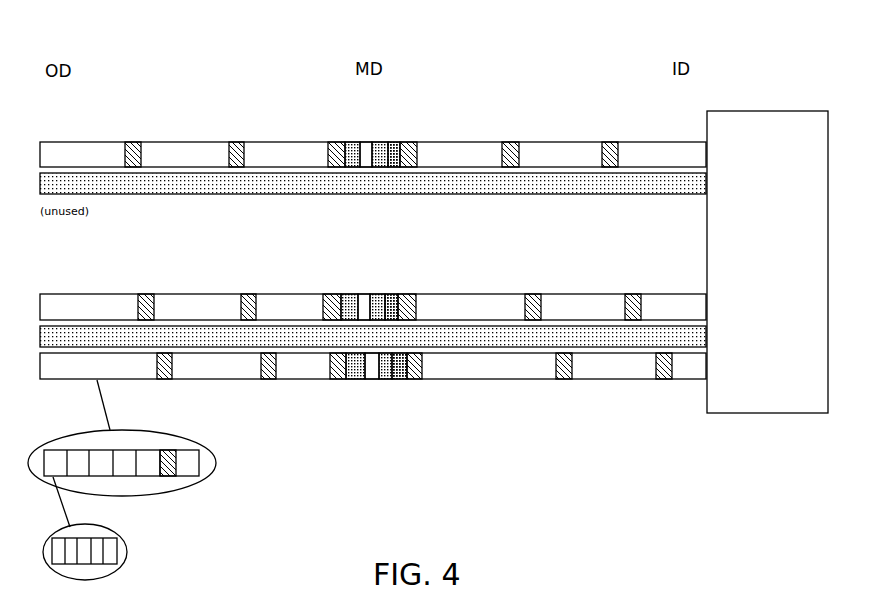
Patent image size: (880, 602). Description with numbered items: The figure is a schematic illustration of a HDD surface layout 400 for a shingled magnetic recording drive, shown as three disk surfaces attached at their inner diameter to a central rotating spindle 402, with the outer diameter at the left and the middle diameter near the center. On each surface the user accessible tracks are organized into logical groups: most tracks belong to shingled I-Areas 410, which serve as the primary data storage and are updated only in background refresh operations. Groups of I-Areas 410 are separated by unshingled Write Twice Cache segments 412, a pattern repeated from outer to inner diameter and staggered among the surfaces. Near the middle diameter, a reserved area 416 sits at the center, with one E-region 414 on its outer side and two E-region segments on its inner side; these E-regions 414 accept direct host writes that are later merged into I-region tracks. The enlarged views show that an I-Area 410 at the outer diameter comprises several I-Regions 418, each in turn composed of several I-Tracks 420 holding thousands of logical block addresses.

The HDD surface layout 400 is at (200, 63).
The spindle 402 is at (786, 210).
The I-Area 410 is at (100, 164).
The Write Twice Cache (W2C) segment 412 is at (330, 142).
The E-region 414 is at (352, 142).
The reserved area (RA) 416 is at (366, 142).
The I-Region 418 is at (147, 473).
The I-Track 420 is at (98, 543).